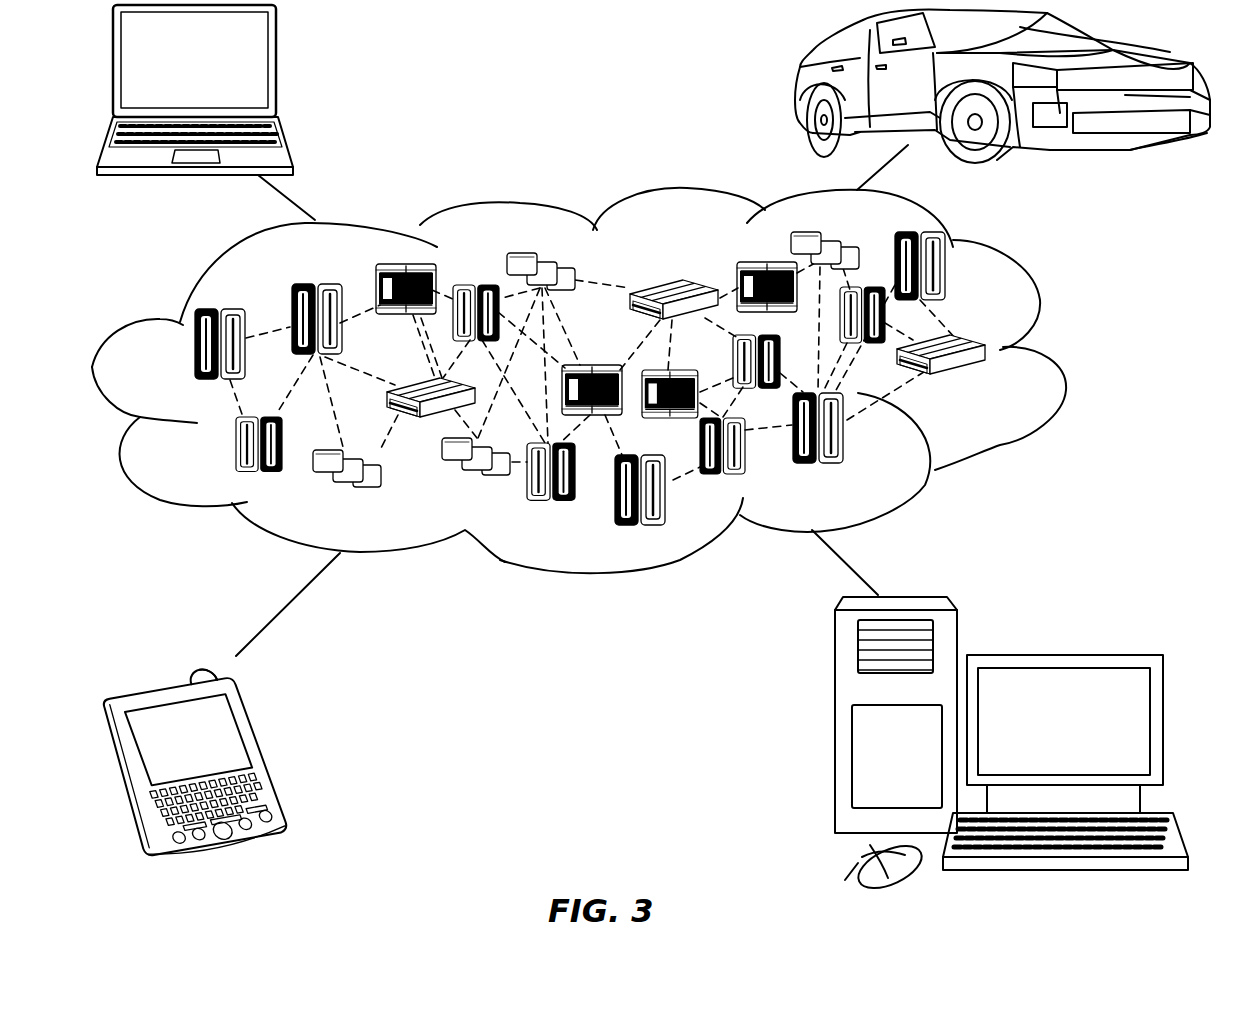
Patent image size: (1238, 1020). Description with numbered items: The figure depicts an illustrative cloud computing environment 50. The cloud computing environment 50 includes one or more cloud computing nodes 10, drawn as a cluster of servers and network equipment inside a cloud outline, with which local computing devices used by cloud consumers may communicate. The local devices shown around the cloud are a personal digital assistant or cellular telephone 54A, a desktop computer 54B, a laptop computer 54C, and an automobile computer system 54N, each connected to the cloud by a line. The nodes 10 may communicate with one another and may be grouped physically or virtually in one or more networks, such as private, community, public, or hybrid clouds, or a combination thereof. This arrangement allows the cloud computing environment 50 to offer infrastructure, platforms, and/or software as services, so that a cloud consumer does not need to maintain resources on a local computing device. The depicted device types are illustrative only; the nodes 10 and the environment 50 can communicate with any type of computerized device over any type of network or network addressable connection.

The cloud computing nodes 10 is at (1000, 388).
The cloud computing environment 50 is at (1060, 353).
The personal digital assistant or cellular telephone 54A is at (266, 752).
The desktop computer 54B is at (1059, 652).
The laptop computer 54C is at (278, 68).
The automobile computer system 54N is at (797, 82).